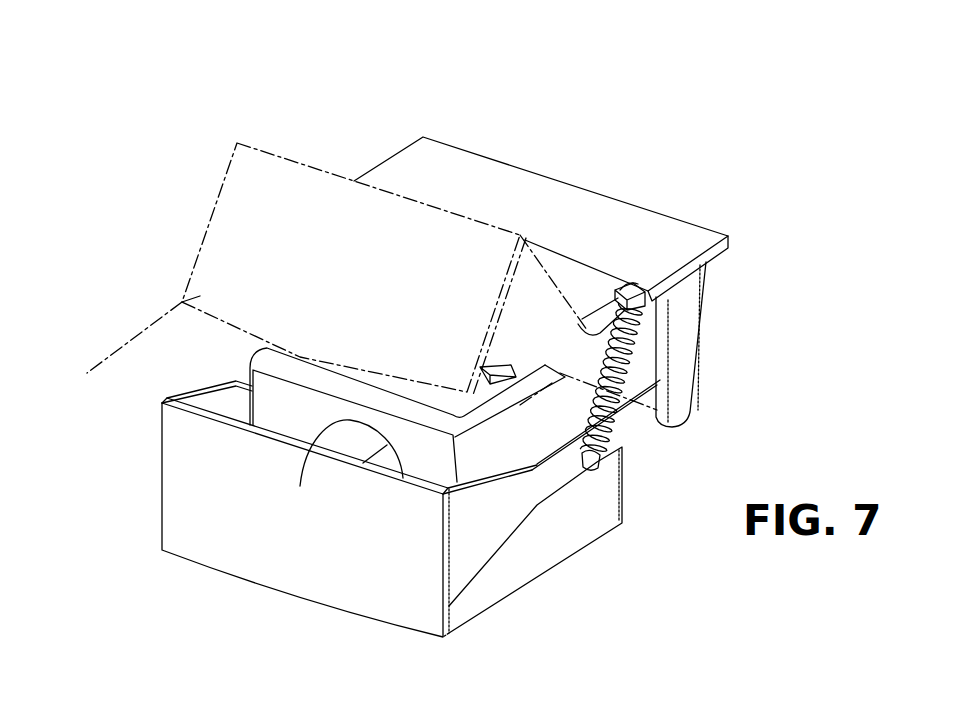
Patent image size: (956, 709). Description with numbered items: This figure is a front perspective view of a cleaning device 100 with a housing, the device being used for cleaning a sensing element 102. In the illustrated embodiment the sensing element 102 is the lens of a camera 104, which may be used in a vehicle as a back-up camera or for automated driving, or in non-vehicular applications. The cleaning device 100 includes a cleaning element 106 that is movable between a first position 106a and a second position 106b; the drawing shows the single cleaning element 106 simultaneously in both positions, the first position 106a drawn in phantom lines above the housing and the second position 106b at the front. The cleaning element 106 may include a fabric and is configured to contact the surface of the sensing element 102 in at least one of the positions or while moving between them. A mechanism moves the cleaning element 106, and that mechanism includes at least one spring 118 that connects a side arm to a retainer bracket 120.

The cleaning device 100 is at (315, 155).
The sensing element 102 is at (337, 443).
The camera 104 is at (567, 542).
The cleaning element 106 is at (180, 453).
The first position of the cleaning element 106a is at (163, 202).
The second position of the cleaning element 106b is at (373, 582).
The spring 118 is at (657, 338).
The retainer bracket 120 is at (622, 225).